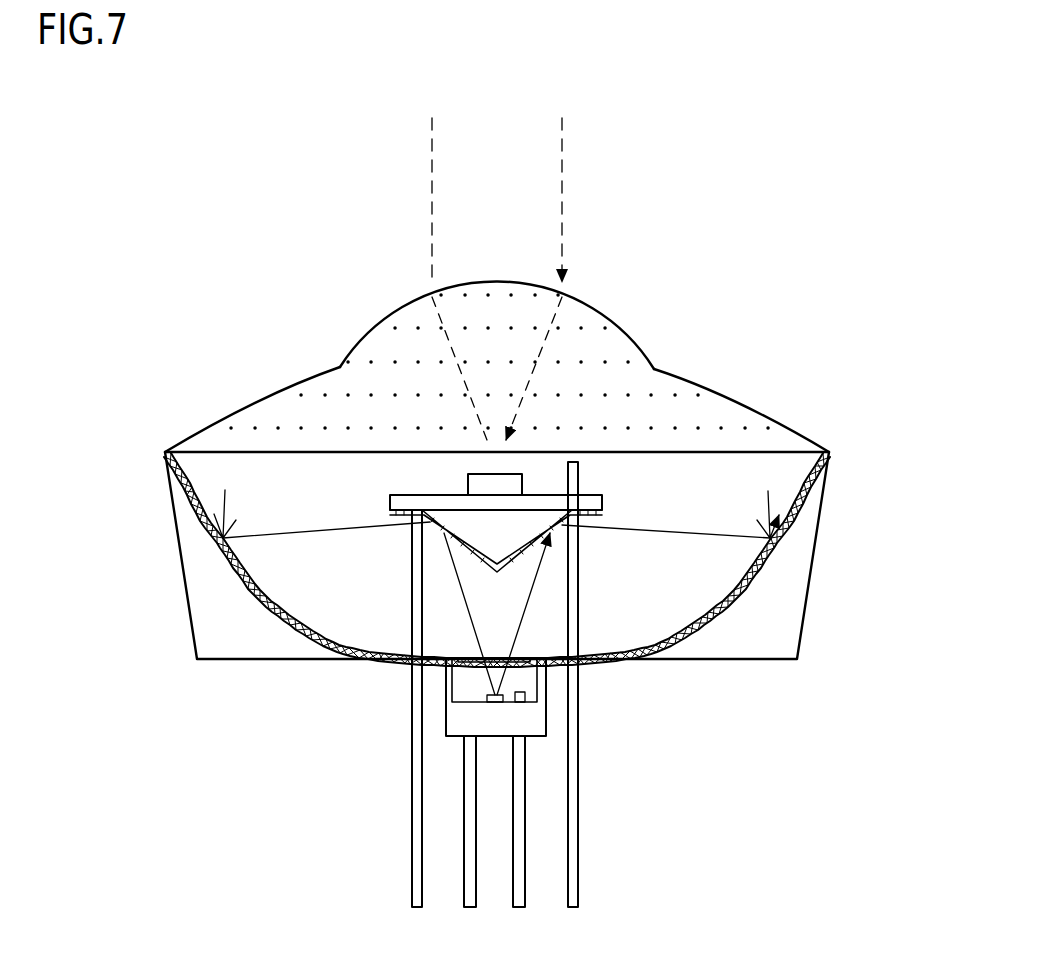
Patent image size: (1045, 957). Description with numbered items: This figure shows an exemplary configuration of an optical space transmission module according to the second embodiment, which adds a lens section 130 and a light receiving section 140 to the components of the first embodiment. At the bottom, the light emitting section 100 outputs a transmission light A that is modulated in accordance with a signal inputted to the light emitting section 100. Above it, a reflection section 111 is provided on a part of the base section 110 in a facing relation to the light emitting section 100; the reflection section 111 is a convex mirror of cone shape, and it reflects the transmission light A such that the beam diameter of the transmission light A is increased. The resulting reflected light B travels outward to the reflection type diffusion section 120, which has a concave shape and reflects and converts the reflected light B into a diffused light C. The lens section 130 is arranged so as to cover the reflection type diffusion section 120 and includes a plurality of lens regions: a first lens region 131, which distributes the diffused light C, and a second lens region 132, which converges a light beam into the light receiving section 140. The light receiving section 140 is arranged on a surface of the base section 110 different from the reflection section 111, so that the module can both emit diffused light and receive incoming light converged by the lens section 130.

The light emitting section 100 is at (419, 759).
The base section 110 is at (506, 634).
The reflection section 111 is at (584, 642).
The reflection type diffusion section 120 is at (456, 588).
The lens section 130 is at (511, 319).
The first lens region 131 is at (511, 334).
The second lens region 132 is at (571, 278).
The light receiving section 140 is at (321, 419).
The transmission light A is at (595, 694).
The reflected light B is at (563, 644).
The diffused light C is at (559, 469).